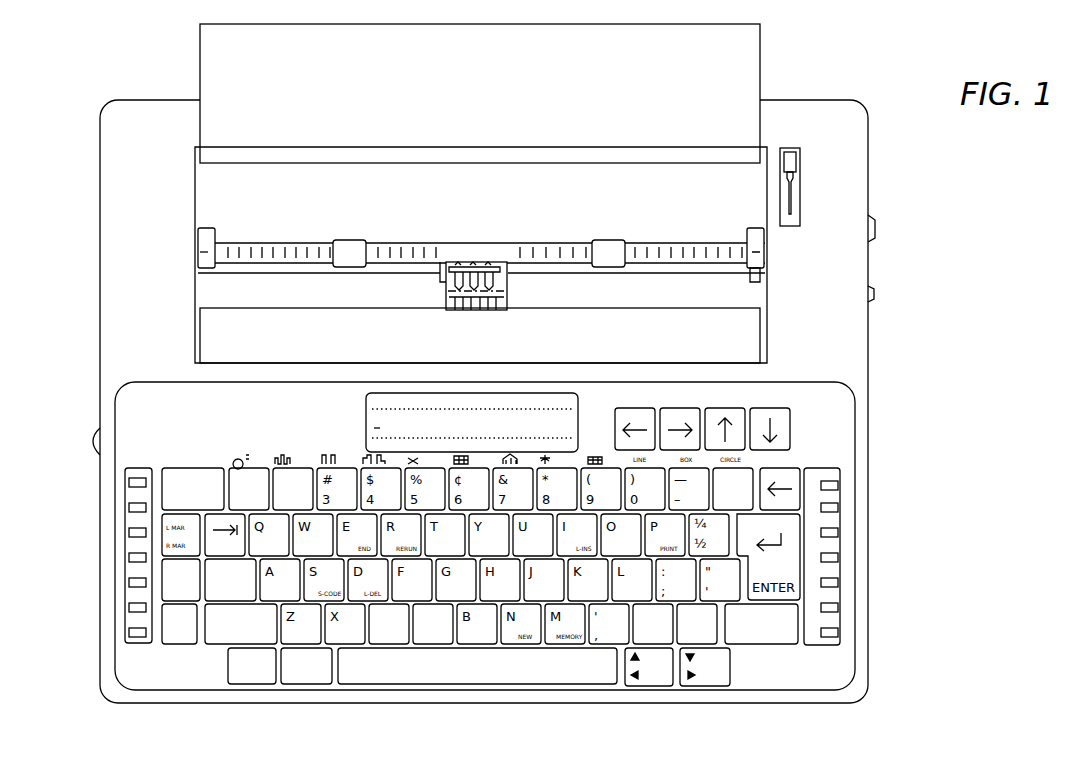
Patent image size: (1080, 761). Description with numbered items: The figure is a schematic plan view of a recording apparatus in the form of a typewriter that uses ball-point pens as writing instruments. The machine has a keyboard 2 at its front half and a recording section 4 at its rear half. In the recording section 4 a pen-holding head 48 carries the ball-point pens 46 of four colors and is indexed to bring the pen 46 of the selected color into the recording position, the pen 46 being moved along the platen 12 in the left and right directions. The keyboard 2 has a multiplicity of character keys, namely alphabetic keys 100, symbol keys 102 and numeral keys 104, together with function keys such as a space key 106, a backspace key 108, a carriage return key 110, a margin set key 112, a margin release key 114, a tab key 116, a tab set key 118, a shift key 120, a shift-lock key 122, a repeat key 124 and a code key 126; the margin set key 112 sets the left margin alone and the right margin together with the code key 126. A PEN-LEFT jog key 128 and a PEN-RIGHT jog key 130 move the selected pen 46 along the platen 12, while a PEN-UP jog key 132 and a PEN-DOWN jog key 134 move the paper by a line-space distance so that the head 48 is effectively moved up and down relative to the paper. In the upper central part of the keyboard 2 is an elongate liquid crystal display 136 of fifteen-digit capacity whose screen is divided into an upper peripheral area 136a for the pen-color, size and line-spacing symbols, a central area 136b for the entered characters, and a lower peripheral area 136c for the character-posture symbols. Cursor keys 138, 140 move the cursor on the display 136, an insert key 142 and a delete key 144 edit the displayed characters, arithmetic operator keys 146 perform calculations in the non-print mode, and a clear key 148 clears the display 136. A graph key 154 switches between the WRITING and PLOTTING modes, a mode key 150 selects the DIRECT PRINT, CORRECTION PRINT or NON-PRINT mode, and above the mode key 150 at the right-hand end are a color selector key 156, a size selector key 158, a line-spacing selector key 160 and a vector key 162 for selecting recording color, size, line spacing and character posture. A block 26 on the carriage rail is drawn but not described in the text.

The keyboard 2 is at (874, 489).
The recording section 4 is at (875, 188).
The platen 12 is at (513, 213).
The carriage block 26 is at (360, 240).
The ball-point pen 46 is at (475, 306).
The pen-holding head 48 is at (518, 295).
The alphabetic keys 100 is at (398, 646).
The symbol keys 102 is at (748, 470).
The numeral keys 104 is at (250, 467).
The space key (bar) 106 is at (505, 677).
The backspace key 108 is at (790, 468).
The carriage return key 110 is at (807, 615).
The margin set key 112 is at (136, 533).
The margin release key 114 is at (172, 467).
The tab key 116 is at (215, 520).
The tab set key 118 is at (165, 590).
The shift key 120 is at (222, 640).
The shift-lock key 122 is at (207, 602).
The repeat key 124 is at (320, 682).
The code key 126 is at (168, 647).
The PEN-LEFT jog key 128 is at (631, 407).
The PEN-RIGHT jog key 130 is at (679, 407).
The PEN-UP jog key 132 is at (723, 407).
The PEN-DOWN jog key 134 is at (771, 407).
The liquid crystal display 136 is at (468, 383).
The upper peripheral area 136a is at (578, 400).
The central area 136b is at (366, 422).
The lower peripheral area 136c is at (580, 442).
The cursor key 138 is at (645, 686).
The cursor key 140 is at (716, 685).
The insert key 142 is at (650, 646).
The delete key 144 is at (724, 632).
The arithmetic operator keys 146 is at (129, 508).
The clear key 148 is at (129, 632).
The mode key 150 is at (838, 633).
The graph key 154 is at (260, 682).
The color selector key 156 is at (838, 531).
The size selector key 158 is at (838, 556).
The line-spacing selector key 160 is at (838, 581).
The vector key 162 is at (838, 606).